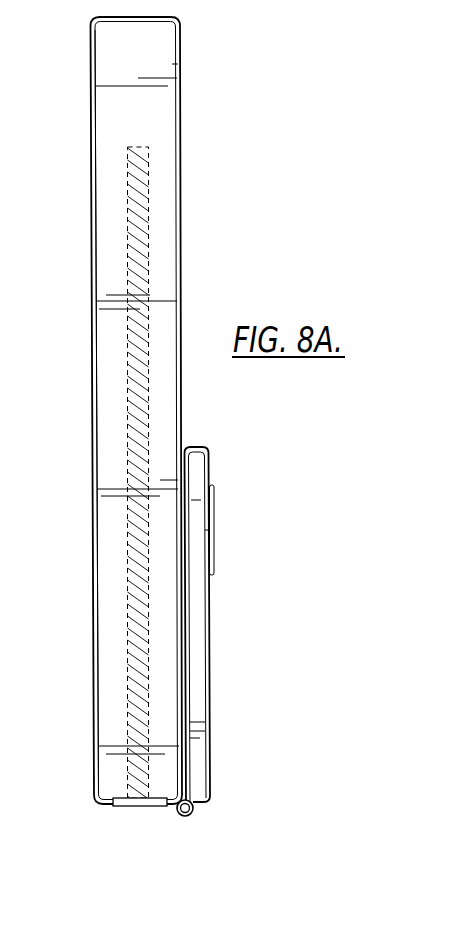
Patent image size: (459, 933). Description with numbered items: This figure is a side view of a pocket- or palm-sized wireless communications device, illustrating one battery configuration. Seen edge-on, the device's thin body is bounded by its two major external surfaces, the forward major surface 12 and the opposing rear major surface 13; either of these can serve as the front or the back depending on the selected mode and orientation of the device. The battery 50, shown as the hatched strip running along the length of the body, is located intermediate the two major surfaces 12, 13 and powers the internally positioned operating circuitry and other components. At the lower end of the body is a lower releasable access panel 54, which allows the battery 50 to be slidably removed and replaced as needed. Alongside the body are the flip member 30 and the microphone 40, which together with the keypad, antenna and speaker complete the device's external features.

The forward major surface 12 is at (181, 222).
The rear major surface 13 is at (93, 310).
The battery 50 is at (138, 583).
The microphone 40 is at (214, 545).
The flip member 30 is at (205, 731).
The lower releasable access panel 54 is at (143, 808).